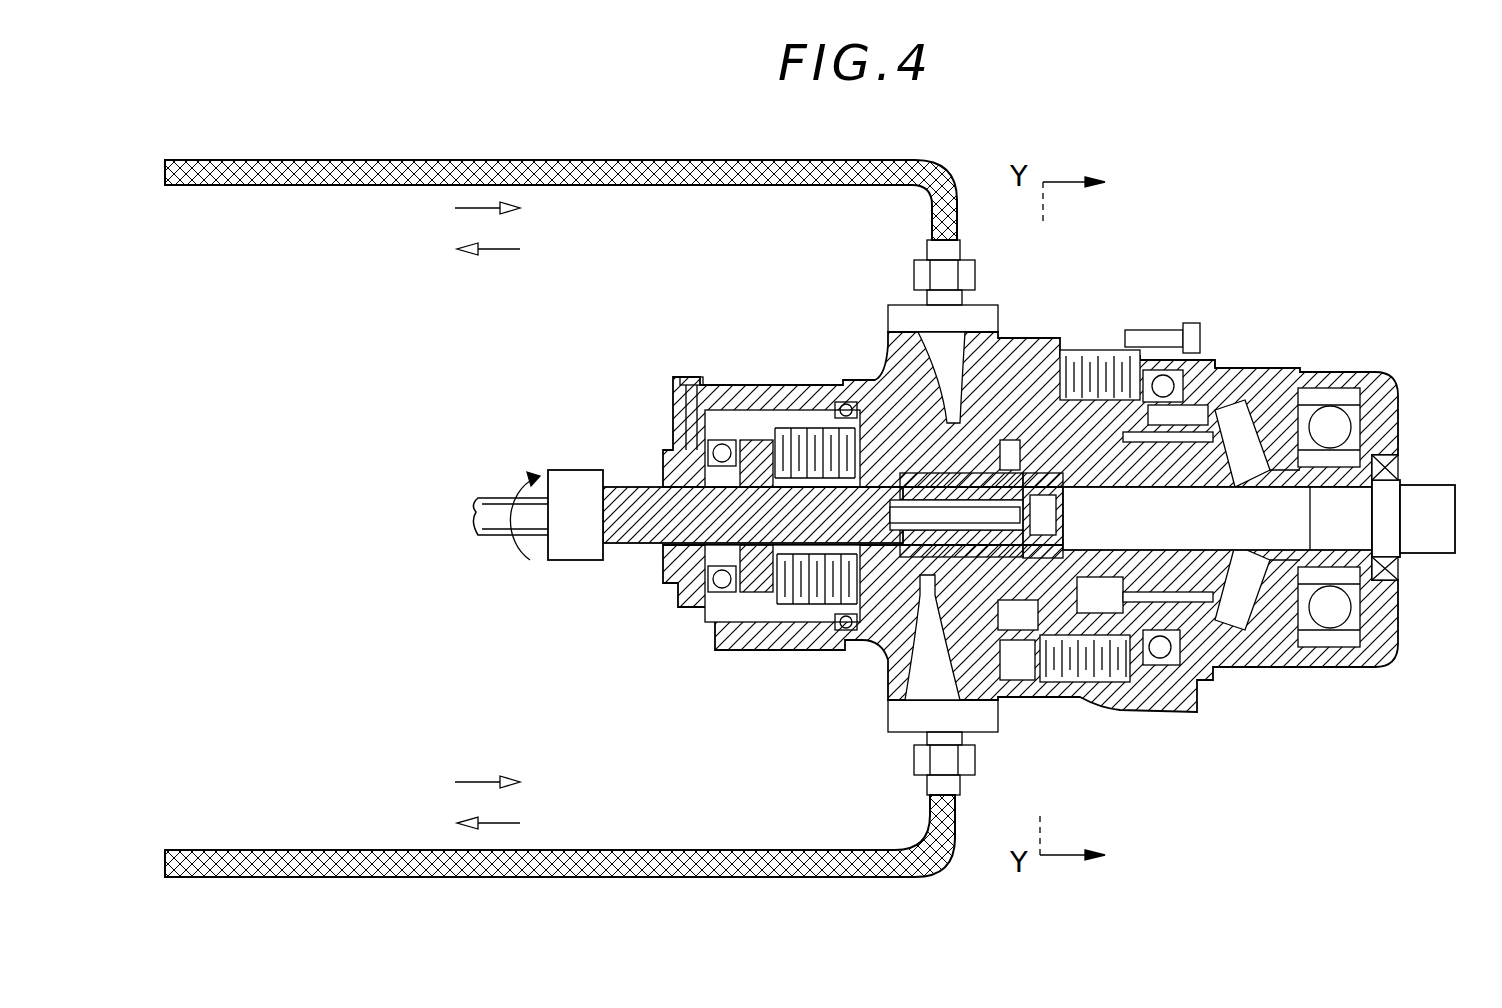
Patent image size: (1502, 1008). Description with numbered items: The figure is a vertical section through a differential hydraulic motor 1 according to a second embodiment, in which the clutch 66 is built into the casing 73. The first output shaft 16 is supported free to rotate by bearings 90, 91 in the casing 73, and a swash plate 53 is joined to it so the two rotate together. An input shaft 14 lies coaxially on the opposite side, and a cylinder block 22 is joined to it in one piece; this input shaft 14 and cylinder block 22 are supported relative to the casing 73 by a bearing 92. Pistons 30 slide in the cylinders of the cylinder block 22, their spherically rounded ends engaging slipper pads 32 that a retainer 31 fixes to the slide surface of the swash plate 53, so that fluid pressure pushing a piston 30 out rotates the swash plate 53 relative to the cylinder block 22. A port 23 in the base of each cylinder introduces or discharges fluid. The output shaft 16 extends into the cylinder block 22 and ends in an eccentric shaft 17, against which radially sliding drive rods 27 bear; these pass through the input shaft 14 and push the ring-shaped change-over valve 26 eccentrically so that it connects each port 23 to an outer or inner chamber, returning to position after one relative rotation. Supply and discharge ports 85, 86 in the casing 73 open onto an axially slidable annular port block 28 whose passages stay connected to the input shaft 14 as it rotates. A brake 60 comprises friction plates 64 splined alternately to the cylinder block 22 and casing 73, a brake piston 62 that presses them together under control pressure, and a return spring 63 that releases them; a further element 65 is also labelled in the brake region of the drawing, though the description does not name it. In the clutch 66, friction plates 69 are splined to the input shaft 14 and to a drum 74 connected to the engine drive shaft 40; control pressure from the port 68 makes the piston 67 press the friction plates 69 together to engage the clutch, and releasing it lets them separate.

The differential hydraulic motor 1 is at (1155, 735).
The input shaft 14 is at (873, 500).
The first output shaft 16 is at (1430, 500).
The eccentric shaft 17 is at (880, 650).
The cylinder block 22 is at (1200, 650).
The port 23 is at (1188, 323).
The ring-shaped change-over valve 26 is at (1075, 375).
The drive rods 27 is at (1037, 460).
The annular port block 28 is at (1003, 453).
The pistons 30 is at (1213, 627).
The retainer 31 is at (1260, 625).
The slipper pad 32 is at (1253, 620).
The engine drive shaft 40 is at (487, 512).
The swash plate 53 is at (1285, 390).
The brake 60 is at (1120, 355).
The brake piston 62 is at (1030, 660).
The return spring 63 is at (1062, 700).
The friction plates 64 is at (1110, 690).
The spring 65 is at (1010, 670).
The clutch 66 is at (773, 470).
The piston 67 is at (765, 583).
The port 68 is at (688, 440).
The friction plates 69 is at (805, 470).
The casing 73 is at (1195, 365).
The drum 74 is at (813, 585).
The port 85 is at (940, 362).
The port 86 is at (937, 677).
The bearing 90 is at (1330, 427).
The bearing 91 is at (1240, 430).
The bearing 92 is at (1188, 690).